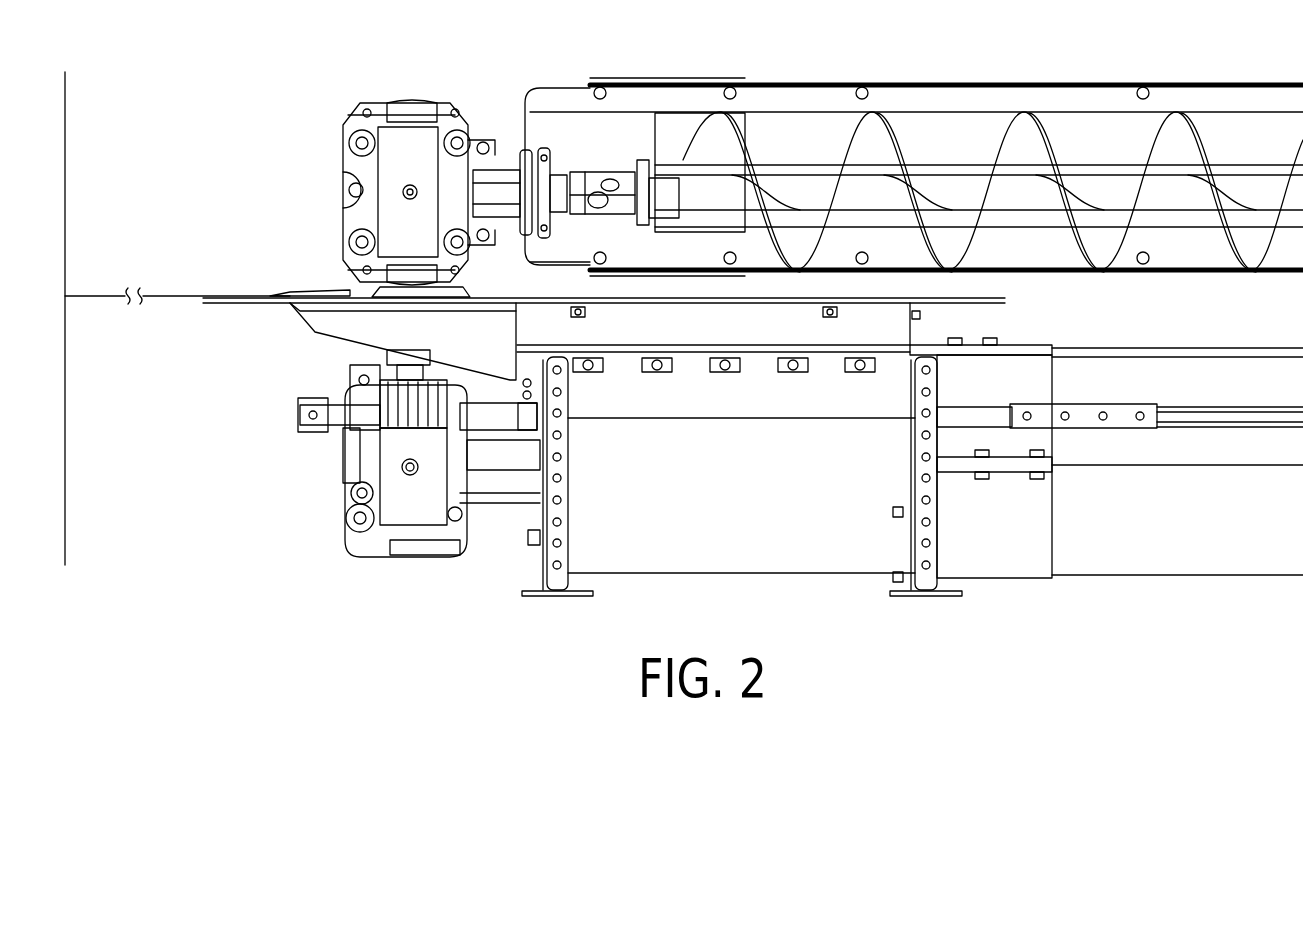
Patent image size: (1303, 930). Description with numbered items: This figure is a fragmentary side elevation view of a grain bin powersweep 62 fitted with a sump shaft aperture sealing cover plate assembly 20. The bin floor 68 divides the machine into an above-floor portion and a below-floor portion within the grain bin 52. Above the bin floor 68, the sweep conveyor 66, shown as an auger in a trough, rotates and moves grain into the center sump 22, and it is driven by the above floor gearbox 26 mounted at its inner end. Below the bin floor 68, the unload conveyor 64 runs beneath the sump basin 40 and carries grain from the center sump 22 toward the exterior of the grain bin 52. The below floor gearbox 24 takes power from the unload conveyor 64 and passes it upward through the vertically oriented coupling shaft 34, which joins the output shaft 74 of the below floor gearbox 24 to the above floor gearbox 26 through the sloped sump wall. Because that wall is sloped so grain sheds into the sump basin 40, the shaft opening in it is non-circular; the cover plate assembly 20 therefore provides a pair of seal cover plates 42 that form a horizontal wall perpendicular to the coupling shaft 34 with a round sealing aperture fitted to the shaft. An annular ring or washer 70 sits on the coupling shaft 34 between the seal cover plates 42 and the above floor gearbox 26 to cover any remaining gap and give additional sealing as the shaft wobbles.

The sump shaft aperture sealing cover plate assembly 20 is at (345, 270).
The center sump 22 is at (632, 578).
The below floor gearbox 24 is at (417, 553).
The above floor gearbox 26 is at (400, 103).
The coupling shaft 34 is at (380, 356).
The sump basin 40 is at (805, 553).
The seal cover plates 42 is at (358, 290).
The grain bin 52 is at (65, 143).
The powersweep 62 is at (352, 573).
The unload conveyor 64 is at (1195, 547).
The sweep conveyor 66 is at (950, 130).
The bin floor 68 is at (170, 296).
The annular ring or washer 70 is at (455, 292).
The output shaft 74 is at (375, 372).